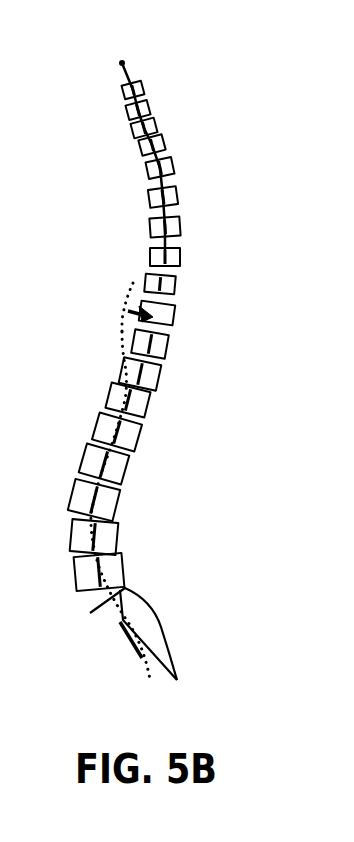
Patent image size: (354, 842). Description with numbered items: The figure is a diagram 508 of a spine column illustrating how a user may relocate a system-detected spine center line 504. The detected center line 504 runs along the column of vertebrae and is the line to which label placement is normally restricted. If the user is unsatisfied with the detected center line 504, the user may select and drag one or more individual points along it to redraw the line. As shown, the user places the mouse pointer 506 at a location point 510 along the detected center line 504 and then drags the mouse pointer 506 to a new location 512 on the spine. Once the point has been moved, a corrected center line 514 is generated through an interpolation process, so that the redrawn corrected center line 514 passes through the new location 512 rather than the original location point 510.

The detected center line 504 is at (133, 283).
The mouse pointer 506 is at (128, 325).
The diagram 508 is at (212, 93).
The location point 510 is at (128, 311).
The new location 512 is at (155, 322).
The corrected center line 514 is at (175, 287).